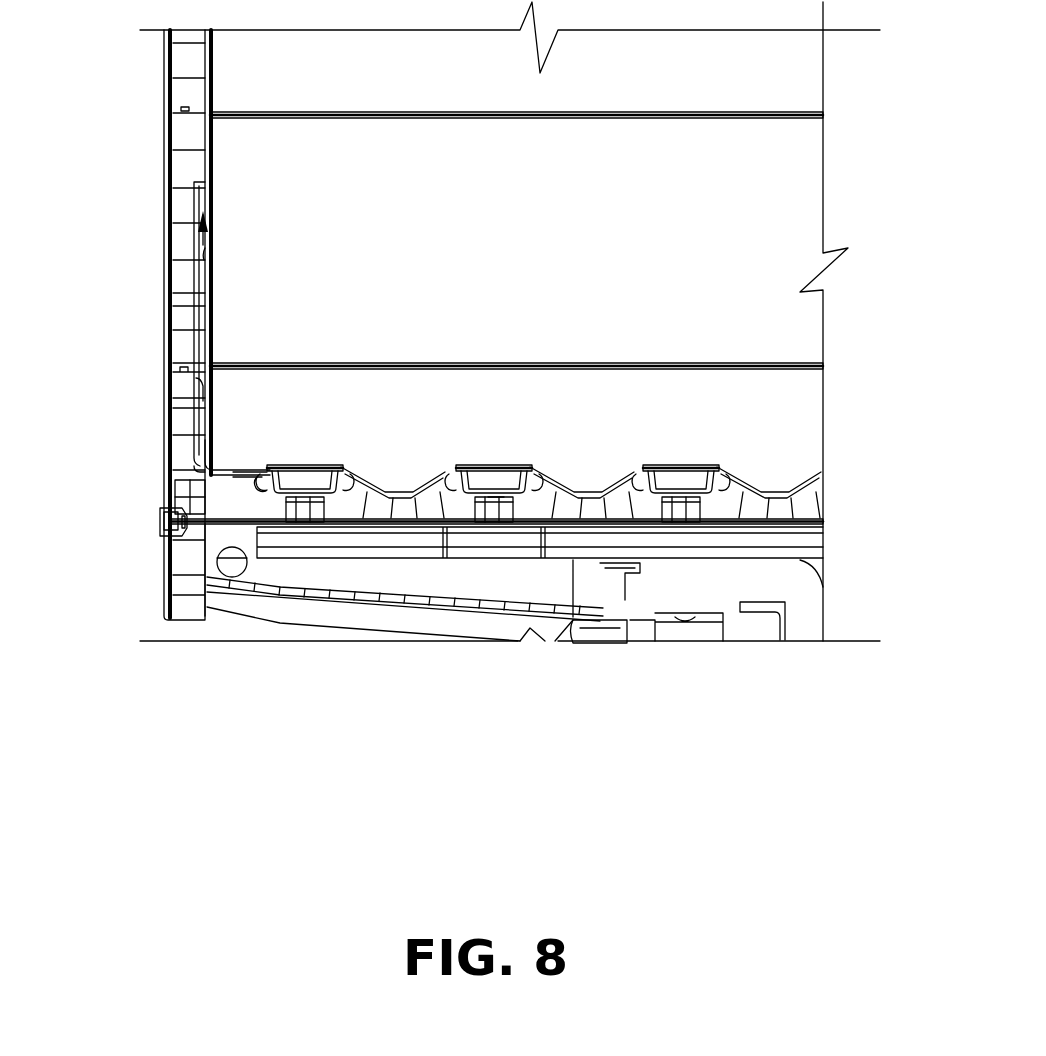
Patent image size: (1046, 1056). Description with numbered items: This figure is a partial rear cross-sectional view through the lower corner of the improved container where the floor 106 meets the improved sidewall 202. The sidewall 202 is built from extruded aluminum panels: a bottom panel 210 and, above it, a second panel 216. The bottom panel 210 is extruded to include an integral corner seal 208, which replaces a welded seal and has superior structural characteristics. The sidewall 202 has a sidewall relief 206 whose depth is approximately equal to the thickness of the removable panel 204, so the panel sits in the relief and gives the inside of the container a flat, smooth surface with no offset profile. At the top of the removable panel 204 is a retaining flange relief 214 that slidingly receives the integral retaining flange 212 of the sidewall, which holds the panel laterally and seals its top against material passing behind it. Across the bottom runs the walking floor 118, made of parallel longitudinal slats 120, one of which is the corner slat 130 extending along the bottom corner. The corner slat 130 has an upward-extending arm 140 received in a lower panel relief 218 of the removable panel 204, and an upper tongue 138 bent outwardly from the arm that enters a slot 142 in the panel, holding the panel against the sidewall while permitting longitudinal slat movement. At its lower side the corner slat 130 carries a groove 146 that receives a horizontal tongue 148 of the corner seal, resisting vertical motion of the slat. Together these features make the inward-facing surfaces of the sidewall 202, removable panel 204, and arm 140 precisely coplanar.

The sidewall 202 is at (185, 93).
The second panel 216 is at (187, 135).
The retaining flange 212 is at (212, 198).
The removable panel 204 is at (202, 272).
The retaining flange relief 214 is at (213, 255).
The sidewall relief 206 is at (190, 311).
The upper tongue 138 is at (210, 372).
The slot 142 is at (190, 383).
The upward-extending arm 140 is at (210, 430).
The lower panel relief 218 is at (200, 413).
The horizontal tongue 148 is at (273, 470).
The groove 146 is at (293, 465).
The bottom panel 210 is at (185, 453).
The integral corner seal 208 is at (177, 492).
The floor 106 is at (230, 537).
The longitudinal slats 120 is at (470, 470).
The corner slat 130 is at (327, 478).
The walking floor 118 is at (528, 615).